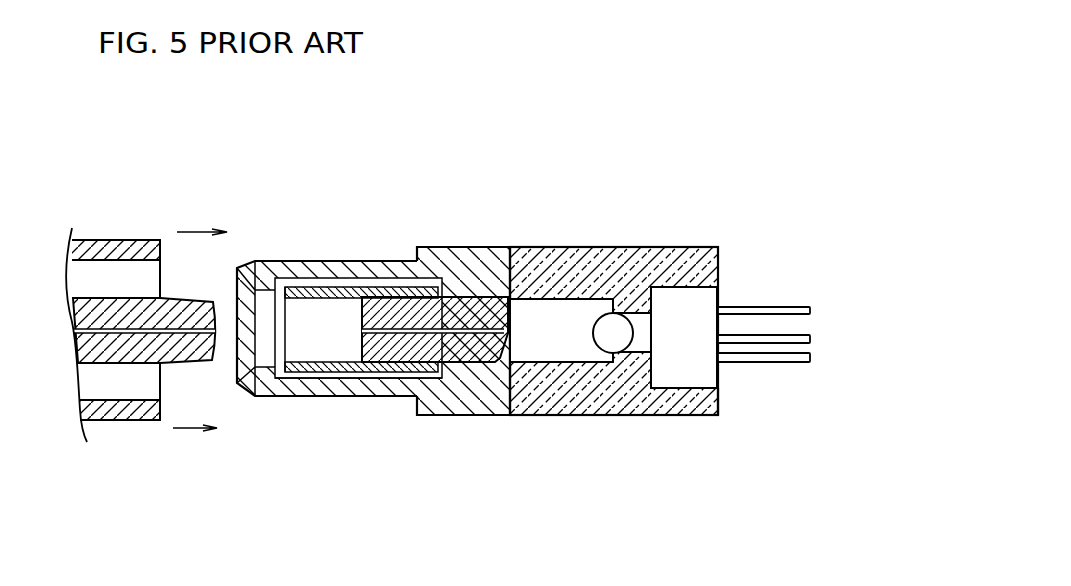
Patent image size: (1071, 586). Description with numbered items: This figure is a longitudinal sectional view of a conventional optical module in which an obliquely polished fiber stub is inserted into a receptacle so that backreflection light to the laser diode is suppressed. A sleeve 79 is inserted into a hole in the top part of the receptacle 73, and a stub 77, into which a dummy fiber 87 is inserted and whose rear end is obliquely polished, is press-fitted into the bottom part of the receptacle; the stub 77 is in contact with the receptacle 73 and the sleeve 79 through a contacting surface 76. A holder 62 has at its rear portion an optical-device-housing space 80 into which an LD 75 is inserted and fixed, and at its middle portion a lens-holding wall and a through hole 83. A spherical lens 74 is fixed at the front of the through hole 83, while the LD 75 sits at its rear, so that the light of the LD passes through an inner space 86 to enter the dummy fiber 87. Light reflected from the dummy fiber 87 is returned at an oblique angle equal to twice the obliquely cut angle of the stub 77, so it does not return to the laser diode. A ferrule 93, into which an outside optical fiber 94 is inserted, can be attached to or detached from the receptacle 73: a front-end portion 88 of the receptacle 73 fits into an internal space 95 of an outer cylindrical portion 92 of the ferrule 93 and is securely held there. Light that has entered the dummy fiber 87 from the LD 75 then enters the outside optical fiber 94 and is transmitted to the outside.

The holder 62 is at (613, 387).
The receptacle 73 is at (312, 388).
The spherical lens 74 is at (608, 327).
The LD (optical device) 75 is at (677, 365).
The contacting surface 76 is at (477, 266).
The stub 77 is at (392, 317).
The sleeve 79 is at (330, 290).
The optical-device-housing space 80 is at (687, 387).
The through hole 83 is at (640, 337).
The inner space 86 is at (560, 340).
The dummy fiber 87 is at (407, 372).
The front-end portion 88 is at (260, 397).
The outer cylindrical portion 92 is at (127, 253).
The ferrule 93 is at (160, 300).
The outside optical fiber 94 is at (170, 327).
The internal space 95 is at (128, 373).